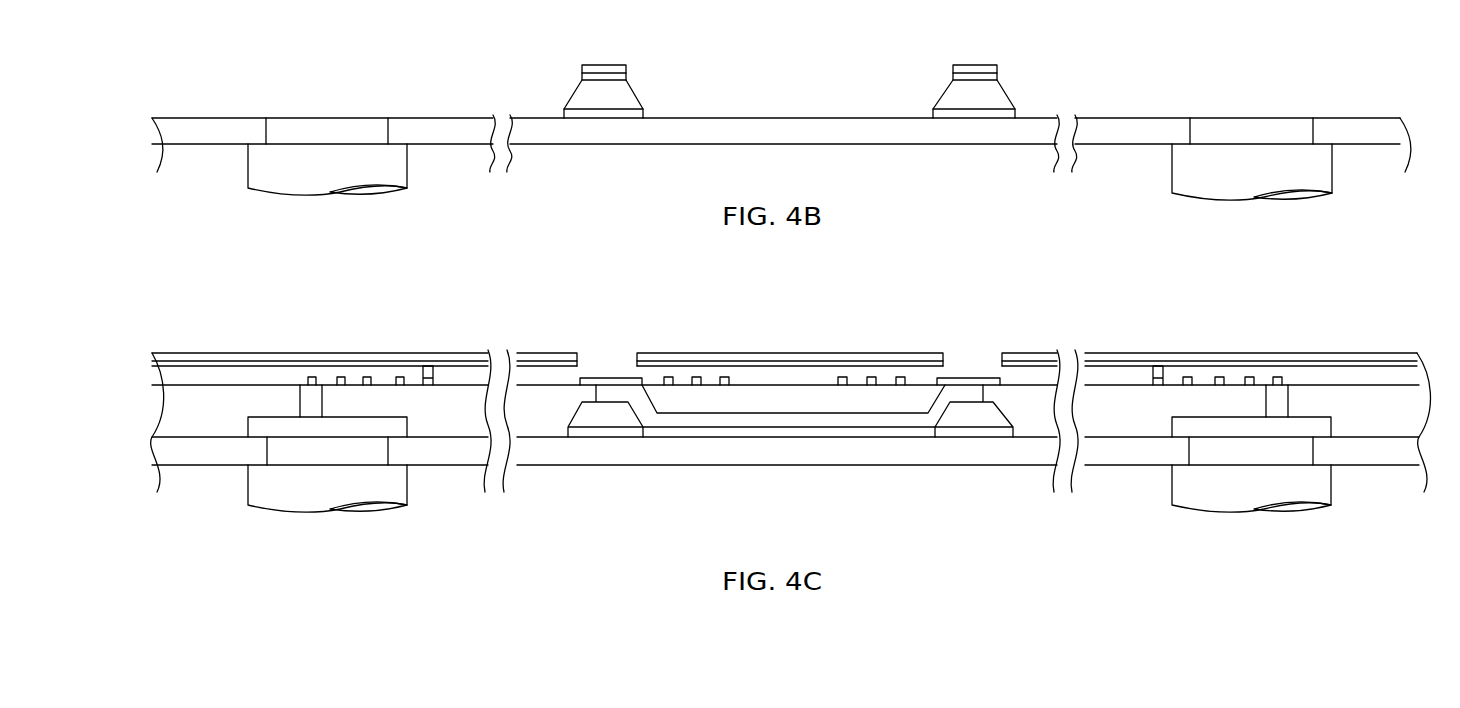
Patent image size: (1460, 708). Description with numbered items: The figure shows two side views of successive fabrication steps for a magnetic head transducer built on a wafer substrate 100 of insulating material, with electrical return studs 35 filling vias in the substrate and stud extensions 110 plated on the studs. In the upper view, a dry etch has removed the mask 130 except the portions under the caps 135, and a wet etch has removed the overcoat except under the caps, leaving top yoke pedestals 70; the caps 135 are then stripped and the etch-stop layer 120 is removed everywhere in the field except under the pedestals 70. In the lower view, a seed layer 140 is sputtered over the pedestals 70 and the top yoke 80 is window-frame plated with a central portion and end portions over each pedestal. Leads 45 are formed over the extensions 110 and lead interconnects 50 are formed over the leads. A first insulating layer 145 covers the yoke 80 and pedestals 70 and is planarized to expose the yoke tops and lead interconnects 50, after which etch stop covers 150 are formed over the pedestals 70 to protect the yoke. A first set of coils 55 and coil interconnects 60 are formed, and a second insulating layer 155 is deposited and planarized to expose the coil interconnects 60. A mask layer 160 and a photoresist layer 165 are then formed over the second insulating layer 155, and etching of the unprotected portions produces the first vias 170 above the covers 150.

In FIG. 4C, the electrical return studs 35 is at (278, 498).
In FIG. 4C, the leads 45 is at (262, 428).
In FIG. 4C, the lead interconnects 50 is at (304, 398).
In FIG. 4C, the first set of coils 55 is at (338, 380).
In FIG. 4C, the coil interconnects 60 is at (430, 370).
In FIG. 4B, the top yoke pedestals 70 is at (630, 100).
In FIG. 4C, the top yoke 80 is at (700, 418).
In FIG. 4B, the wafer substrate 100 is at (629, 182).
In FIG. 4C, the wafer substrate 100 is at (621, 502).
In FIG. 4C, the stud extensions 110 is at (378, 448).
In FIG. 4B, the etch-stop layer 120 is at (568, 115).
In FIG. 4B, the mask 130 is at (618, 77).
In FIG. 4B, the caps 135 is at (597, 63).
In FIG. 4C, the seed layer 140 is at (828, 433).
In FIG. 4C, the first insulating layer 145 is at (212, 408).
In FIG. 4C, the etch stop covers 150 is at (610, 380).
In FIG. 4C, the second insulating layer 155 is at (262, 376).
In FIG. 4C, the mask layer 160 is at (385, 362).
In FIG. 4C, the photoresist layer 165 is at (190, 352).
In FIG. 4C, the first vias 170 is at (596, 365).